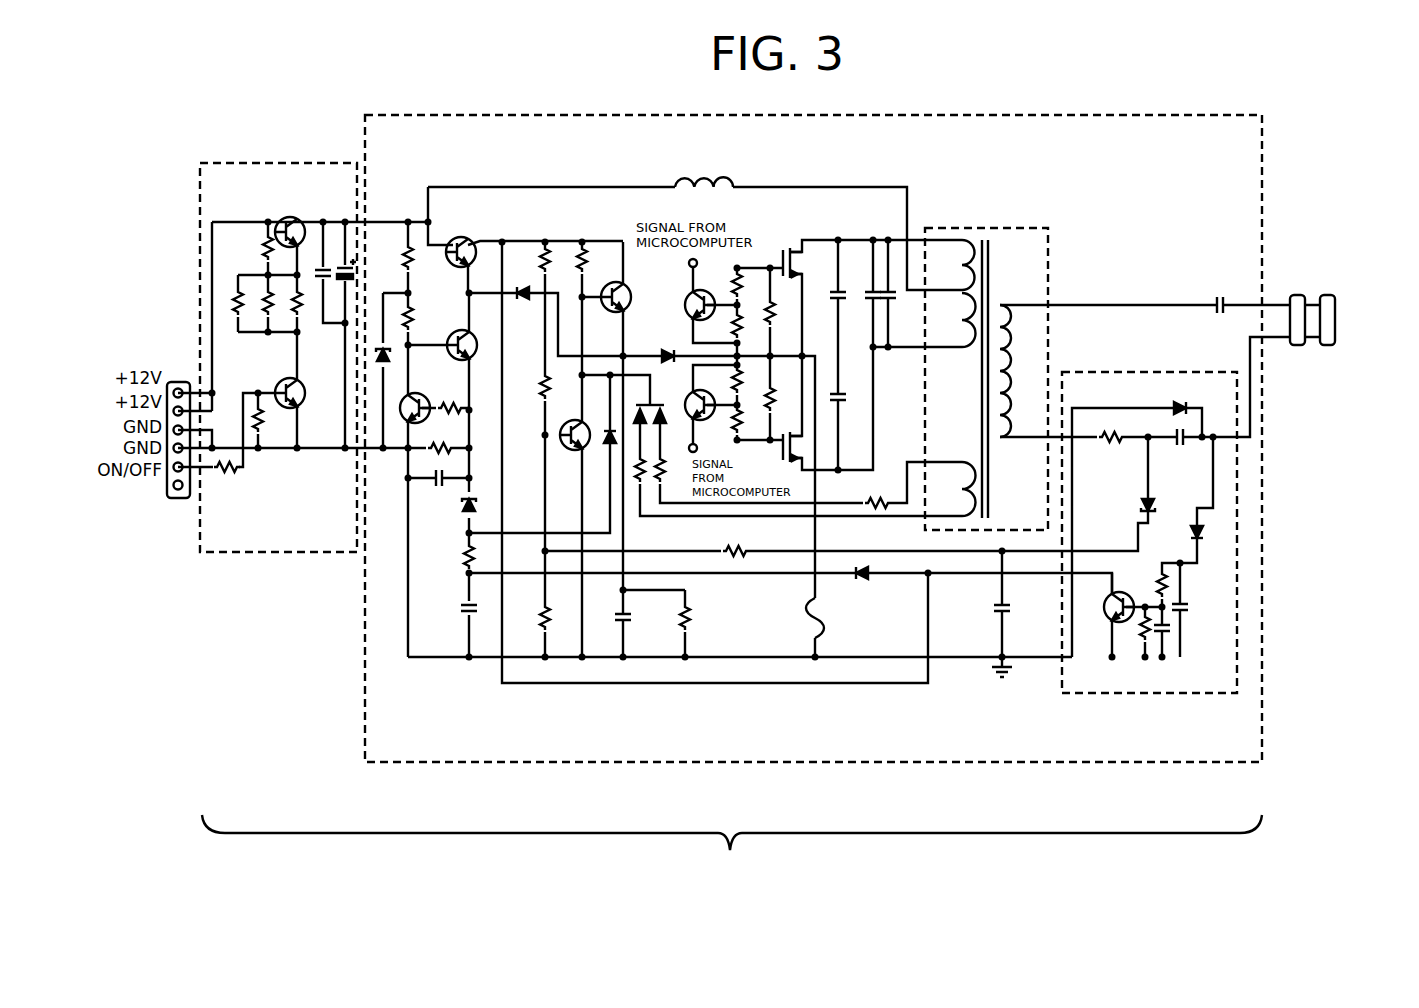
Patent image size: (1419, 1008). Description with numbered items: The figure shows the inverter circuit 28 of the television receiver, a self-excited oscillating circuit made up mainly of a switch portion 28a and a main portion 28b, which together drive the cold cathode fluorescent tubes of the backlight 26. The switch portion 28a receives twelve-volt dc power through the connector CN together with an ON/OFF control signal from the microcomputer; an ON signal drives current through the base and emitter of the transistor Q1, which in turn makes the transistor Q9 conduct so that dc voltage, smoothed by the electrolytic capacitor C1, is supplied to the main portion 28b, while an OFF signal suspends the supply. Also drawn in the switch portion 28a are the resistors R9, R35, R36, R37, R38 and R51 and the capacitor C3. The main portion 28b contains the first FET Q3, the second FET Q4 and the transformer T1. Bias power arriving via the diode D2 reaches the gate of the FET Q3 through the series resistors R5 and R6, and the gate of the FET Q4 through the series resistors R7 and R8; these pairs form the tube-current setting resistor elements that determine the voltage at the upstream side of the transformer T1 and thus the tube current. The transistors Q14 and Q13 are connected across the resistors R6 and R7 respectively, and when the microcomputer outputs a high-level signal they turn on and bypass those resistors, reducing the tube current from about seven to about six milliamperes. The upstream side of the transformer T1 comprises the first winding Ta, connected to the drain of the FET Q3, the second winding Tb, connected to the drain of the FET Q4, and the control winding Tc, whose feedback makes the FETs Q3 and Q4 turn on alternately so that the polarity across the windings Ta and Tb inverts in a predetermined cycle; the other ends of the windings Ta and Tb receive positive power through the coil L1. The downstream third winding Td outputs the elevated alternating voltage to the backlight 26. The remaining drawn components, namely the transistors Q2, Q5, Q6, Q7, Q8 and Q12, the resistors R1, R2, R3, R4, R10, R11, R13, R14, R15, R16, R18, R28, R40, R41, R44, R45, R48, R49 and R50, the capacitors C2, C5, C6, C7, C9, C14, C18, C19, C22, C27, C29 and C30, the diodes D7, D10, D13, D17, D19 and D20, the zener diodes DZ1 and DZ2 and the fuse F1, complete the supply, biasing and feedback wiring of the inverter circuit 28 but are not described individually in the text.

The inverter circuit 28 is at (732, 851).
The switch portion 28a is at (253, 552).
The main portion 28b is at (437, 762).
The backlight 26 is at (1320, 352).
The connector CN is at (1301, 310).
The coil L1 is at (704, 169).
The transformer T1 is at (986, 367).
The first winding Ta is at (952, 265).
The second winding Tb is at (953, 320).
The control winding Tc is at (953, 489).
The third winding Td is at (1023, 371).
The transistor Q1 is at (304, 390).
The transistor Q2 is at (534, 253).
The first FET Q3 is at (795, 248).
The second FET Q4 is at (786, 459).
The transistor Q5 is at (473, 326).
The transistor Q6 is at (420, 399).
The transistor Q7 is at (614, 309).
The transistor Q8 is at (571, 447).
The transistor Q9 is at (290, 236).
The transistor Q12 is at (1105, 617).
The second transistor Q13 is at (707, 412).
The first transistor Q14 is at (686, 289).
The resistor R1 is at (532, 261).
The resistor R2 is at (558, 617).
The resistor R3 is at (735, 542).
The resistor R4 is at (395, 257).
The first resistor R5 is at (746, 284).
The second resistor R6 is at (746, 325).
The third resistor R7 is at (746, 382).
The fourth resistor R8 is at (746, 420).
The resistor R9 is at (255, 248).
The resistor R10 is at (533, 389).
The resistor R11 is at (1148, 641).
The resistor R13 is at (415, 319).
The resistor R14 is at (451, 420).
The resistor R15 is at (443, 459).
The resistor R16 is at (569, 264).
The resistor R18 is at (1111, 449).
The resistor R28 is at (1143, 580).
The resistor R35 is at (285, 303).
The resistor R36 is at (256, 303).
The resistor R37 is at (227, 479).
The resistor R38 is at (266, 420).
The resistor R40 is at (859, 492).
The resistor R41 is at (452, 556).
The resistor R44 is at (636, 474).
The resistor R45 is at (669, 467).
The resistor R48 is at (778, 312).
The resistor R49 is at (778, 397).
The resistor R50 is at (703, 617).
The resistor R51 is at (226, 303).
The electrolytic capacitor C1 is at (337, 335).
The capacitor C2 is at (635, 617).
The capacitor C3 is at (320, 272).
The capacitor C5 is at (861, 294).
The capacitor C6 is at (990, 608).
The capacitor C7 is at (1219, 294).
The capacitor C9 is at (456, 607).
The capacitor C14 is at (1198, 607).
The capacitor C18 is at (1180, 447).
The capacitor C19 is at (441, 488).
The capacitor C22 is at (1170, 629).
The capacitor C27 is at (893, 313).
The capacitor C29 is at (825, 297).
The capacitor C30 is at (846, 395).
The diode D2 is at (663, 341).
The diode D7 is at (1212, 531).
The diode D10 is at (1179, 395).
The diode D13 is at (600, 462).
The diode D17 is at (859, 587).
The diode pair D19 is at (656, 401).
The diode D20 is at (524, 307).
The zener diode DZ1 is at (454, 517).
The zener diode DZ2 is at (388, 370).
The fuse F1 is at (803, 615).